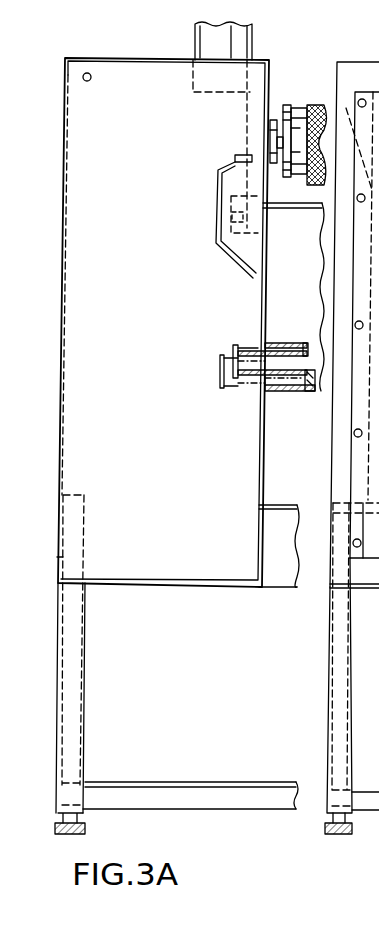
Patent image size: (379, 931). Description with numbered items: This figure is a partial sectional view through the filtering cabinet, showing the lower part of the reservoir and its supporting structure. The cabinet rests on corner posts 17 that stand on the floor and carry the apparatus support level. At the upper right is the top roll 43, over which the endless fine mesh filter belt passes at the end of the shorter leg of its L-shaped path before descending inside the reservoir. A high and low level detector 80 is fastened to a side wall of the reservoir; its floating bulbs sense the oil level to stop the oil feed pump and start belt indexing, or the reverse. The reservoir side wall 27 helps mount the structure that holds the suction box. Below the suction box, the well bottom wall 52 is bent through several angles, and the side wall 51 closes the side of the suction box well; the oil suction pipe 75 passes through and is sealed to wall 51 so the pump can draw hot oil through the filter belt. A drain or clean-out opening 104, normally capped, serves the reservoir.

The corner post 17 is at (330, 722).
The top roll 43 is at (318, 106).
The high and low level detector 80 is at (218, 203).
The oil suction pipe 75 is at (246, 345).
The side wall of the reservoir 27 is at (296, 326).
The drain or clean-out opening 104 is at (232, 392).
The side wall of the suction box well 51 is at (290, 386).
The well bottom wall 52 is at (308, 396).